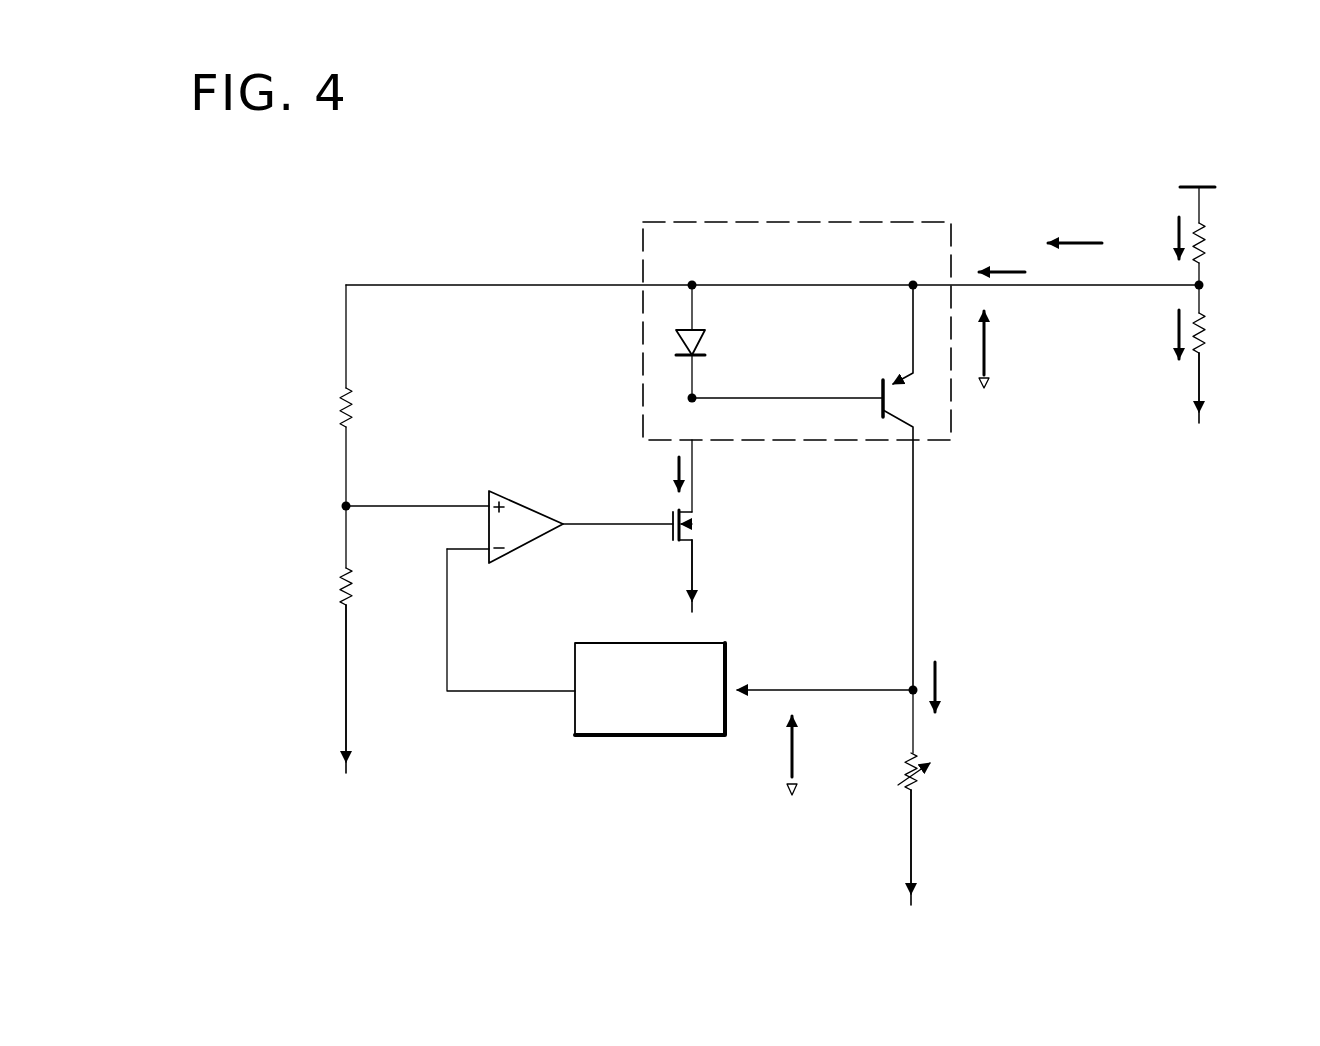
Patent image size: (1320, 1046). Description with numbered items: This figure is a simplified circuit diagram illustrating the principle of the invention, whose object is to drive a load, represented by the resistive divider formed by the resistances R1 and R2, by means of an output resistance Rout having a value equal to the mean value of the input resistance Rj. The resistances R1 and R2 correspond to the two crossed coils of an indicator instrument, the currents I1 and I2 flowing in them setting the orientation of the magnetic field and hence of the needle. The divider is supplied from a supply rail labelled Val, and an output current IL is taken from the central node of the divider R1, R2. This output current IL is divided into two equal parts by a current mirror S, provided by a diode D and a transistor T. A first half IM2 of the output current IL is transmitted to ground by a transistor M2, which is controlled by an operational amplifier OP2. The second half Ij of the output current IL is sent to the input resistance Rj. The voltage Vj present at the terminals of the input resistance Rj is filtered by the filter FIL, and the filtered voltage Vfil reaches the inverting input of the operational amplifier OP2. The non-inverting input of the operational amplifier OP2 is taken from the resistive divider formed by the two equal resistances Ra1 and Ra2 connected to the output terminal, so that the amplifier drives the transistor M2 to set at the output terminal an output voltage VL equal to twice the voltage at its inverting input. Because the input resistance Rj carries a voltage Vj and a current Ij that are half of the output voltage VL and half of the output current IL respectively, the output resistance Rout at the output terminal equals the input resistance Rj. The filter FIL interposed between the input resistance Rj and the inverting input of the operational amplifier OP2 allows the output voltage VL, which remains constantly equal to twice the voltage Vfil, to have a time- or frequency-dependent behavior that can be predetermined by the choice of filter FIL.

The current mirror S is at (643, 265).
The diode D is at (708, 343).
The transistor T is at (880, 409).
The transistor M2 is at (697, 530).
The first half of the output current IM2 is at (670, 472).
The operational amplifier OP2 is at (524, 506).
The resistance Ra1 is at (340, 405).
The resistance Ra2 is at (340, 595).
The filter FIL is at (620, 736).
The voltage output from the filter Vfil is at (494, 693).
The voltage Vj is at (788, 750).
The second half of the output current Ij is at (938, 688).
The input resistance Rj is at (920, 776).
The supply voltage Val is at (1209, 185).
The resistance R1 is at (1207, 246).
The resistance R2 is at (1207, 336).
The current I1 is at (1176, 228).
The current I2 is at (1176, 343).
The output current IL is at (996, 270).
The output resistance Rout is at (1073, 243).
The output voltage VL is at (990, 346).